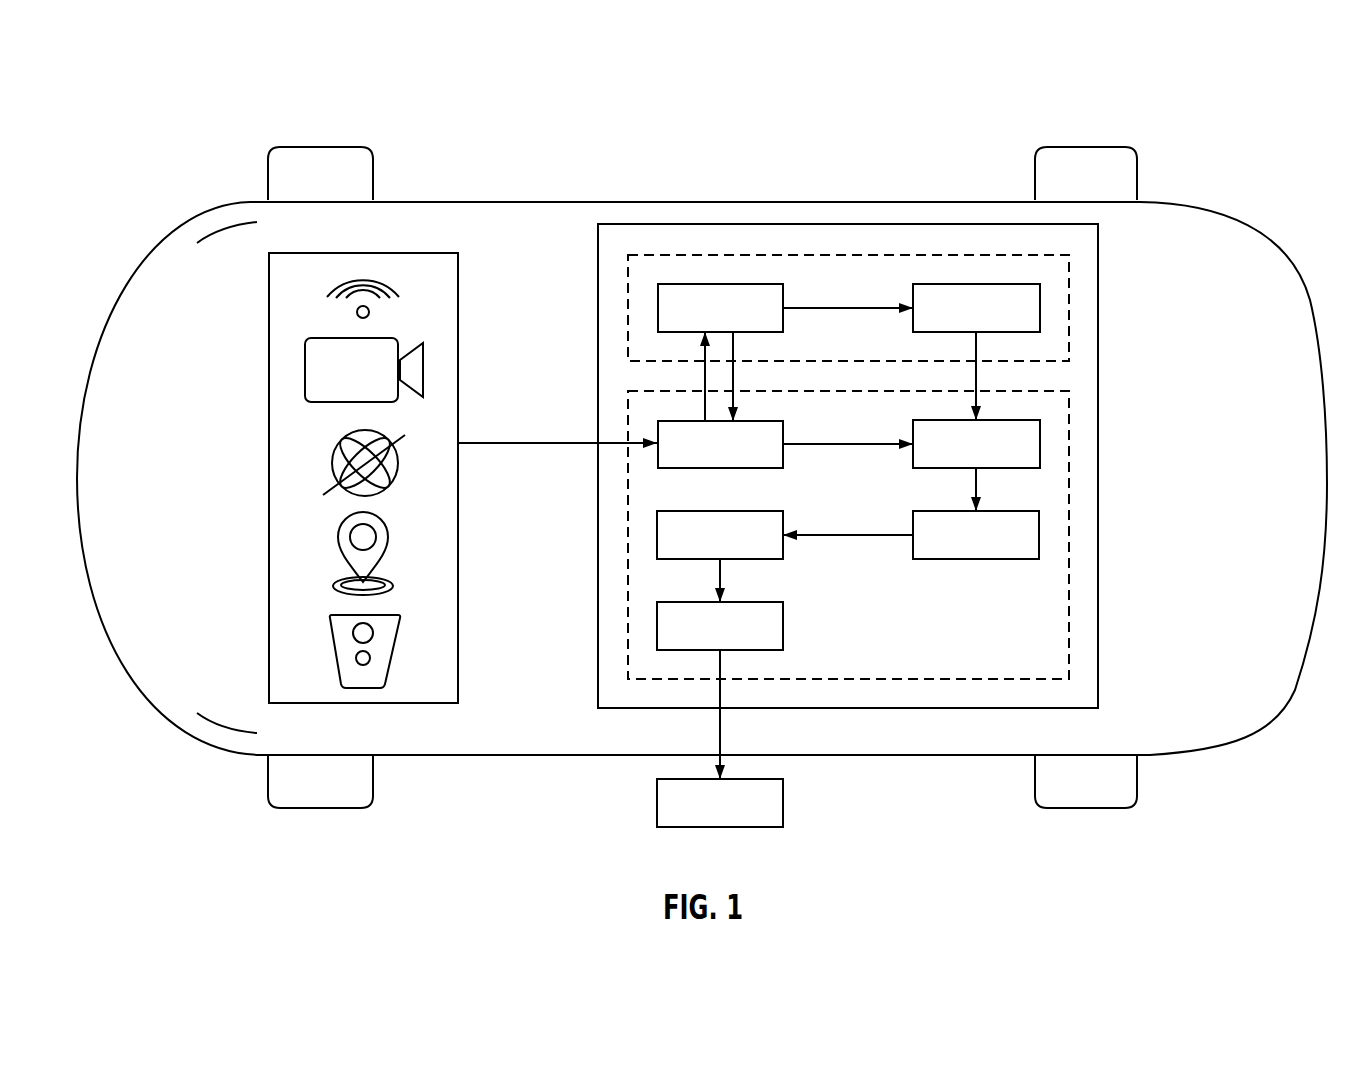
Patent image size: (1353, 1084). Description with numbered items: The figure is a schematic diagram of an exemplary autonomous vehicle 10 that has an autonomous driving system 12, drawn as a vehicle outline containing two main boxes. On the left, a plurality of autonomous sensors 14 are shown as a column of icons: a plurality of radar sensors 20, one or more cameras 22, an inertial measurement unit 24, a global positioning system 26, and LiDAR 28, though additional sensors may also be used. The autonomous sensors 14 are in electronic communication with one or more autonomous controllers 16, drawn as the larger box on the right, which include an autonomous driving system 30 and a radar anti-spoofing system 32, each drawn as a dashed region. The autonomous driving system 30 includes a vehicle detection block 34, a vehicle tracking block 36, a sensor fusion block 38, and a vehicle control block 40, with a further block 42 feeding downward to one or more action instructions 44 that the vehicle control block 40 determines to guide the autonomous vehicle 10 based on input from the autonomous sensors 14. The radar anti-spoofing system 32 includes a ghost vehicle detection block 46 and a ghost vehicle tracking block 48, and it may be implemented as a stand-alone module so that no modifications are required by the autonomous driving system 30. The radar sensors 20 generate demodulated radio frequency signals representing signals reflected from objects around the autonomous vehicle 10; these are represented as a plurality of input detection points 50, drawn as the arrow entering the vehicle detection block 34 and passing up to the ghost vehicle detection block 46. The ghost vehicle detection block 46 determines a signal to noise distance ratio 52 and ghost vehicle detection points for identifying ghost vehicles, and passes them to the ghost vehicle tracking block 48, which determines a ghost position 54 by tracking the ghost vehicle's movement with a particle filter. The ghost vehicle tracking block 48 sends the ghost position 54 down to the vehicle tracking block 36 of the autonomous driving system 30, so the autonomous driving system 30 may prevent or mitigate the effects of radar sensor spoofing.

The autonomous vehicle 10 is at (1214, 110).
The autonomous driving system 12 is at (490, 248).
The autonomous sensors 14 is at (268, 478).
The autonomous controllers 16 is at (1098, 633).
The radar sensors 20 is at (356, 264).
The cameras 22 is at (337, 338).
The inertial measurement unit 24 is at (340, 438).
The global positioning system 26 is at (340, 522).
The LiDAR 28 is at (345, 615).
The autonomous driving system 30 is at (1070, 466).
The radar anti-spoofing system 32 is at (1070, 296).
The vehicle detection block 34 is at (705, 460).
The vehicle tracking block 36 is at (961, 460).
The sensor fusion block 38 is at (961, 551).
The vehicle control block 40 is at (705, 551).
The actuator interface 42 is at (705, 642).
The action instructions 44 is at (705, 819).
The ghost vehicle detection block 46 is at (705, 324).
The ghost vehicle tracking block 48 is at (961, 324).
The input detection points 50 is at (548, 443).
The signal to noise distance ratio 52 is at (733, 354).
The ghost position 54 is at (976, 354).